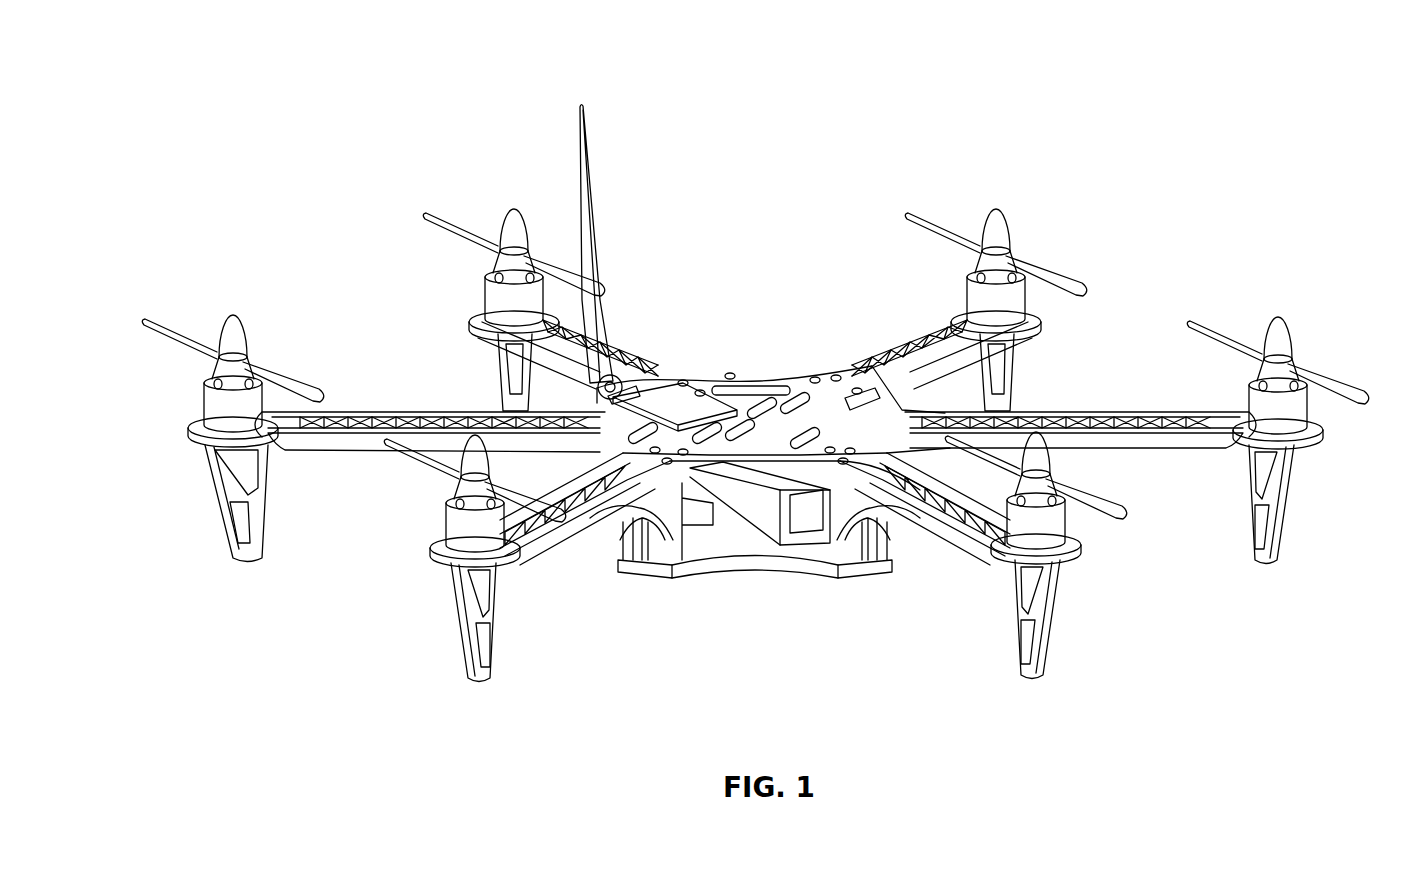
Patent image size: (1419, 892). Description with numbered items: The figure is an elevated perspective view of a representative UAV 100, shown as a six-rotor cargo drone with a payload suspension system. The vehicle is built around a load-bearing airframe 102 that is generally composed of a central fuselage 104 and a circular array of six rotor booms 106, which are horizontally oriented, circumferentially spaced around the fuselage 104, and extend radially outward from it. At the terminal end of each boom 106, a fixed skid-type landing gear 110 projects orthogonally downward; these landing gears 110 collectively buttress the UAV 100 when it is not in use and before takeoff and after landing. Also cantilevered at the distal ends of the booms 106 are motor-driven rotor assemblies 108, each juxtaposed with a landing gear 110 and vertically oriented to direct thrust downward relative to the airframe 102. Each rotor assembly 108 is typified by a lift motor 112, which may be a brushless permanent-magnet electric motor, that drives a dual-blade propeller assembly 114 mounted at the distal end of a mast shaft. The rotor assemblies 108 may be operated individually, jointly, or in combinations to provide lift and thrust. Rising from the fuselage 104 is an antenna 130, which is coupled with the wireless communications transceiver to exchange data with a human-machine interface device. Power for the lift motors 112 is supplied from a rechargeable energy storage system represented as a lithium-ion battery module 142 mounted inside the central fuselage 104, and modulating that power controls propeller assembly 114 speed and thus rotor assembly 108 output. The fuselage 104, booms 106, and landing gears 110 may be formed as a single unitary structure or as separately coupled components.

The UAV 100 is at (235, 112).
The airframe 102 is at (742, 274).
The central fuselage 104 is at (768, 382).
The rotor booms 106 is at (377, 412).
The rotor assemblies 108 is at (512, 194).
The landing gear 110 is at (235, 548).
The lift motor 112 is at (1302, 405).
The propeller assembly 114 is at (1338, 383).
The antenna 130 is at (585, 120).
The battery module 142 is at (752, 540).